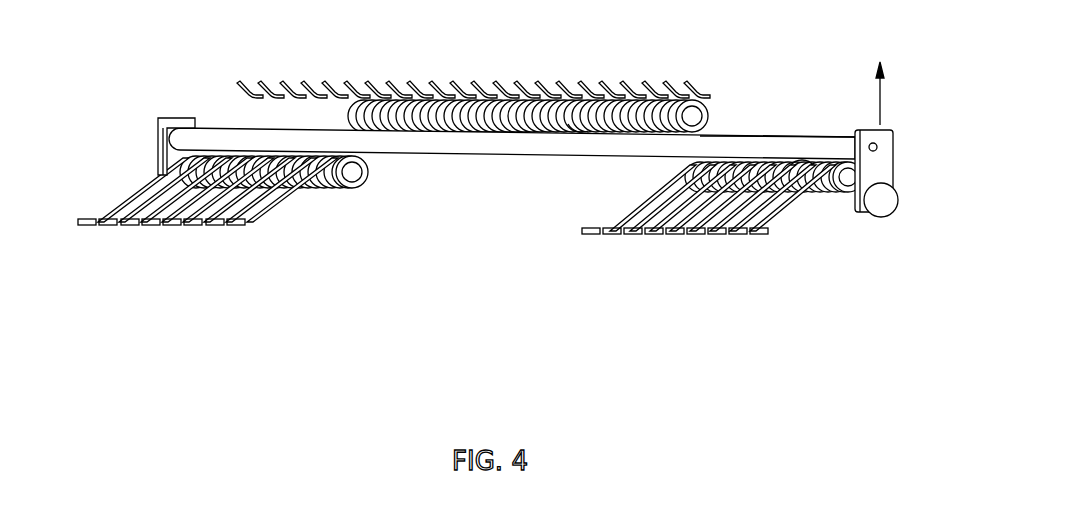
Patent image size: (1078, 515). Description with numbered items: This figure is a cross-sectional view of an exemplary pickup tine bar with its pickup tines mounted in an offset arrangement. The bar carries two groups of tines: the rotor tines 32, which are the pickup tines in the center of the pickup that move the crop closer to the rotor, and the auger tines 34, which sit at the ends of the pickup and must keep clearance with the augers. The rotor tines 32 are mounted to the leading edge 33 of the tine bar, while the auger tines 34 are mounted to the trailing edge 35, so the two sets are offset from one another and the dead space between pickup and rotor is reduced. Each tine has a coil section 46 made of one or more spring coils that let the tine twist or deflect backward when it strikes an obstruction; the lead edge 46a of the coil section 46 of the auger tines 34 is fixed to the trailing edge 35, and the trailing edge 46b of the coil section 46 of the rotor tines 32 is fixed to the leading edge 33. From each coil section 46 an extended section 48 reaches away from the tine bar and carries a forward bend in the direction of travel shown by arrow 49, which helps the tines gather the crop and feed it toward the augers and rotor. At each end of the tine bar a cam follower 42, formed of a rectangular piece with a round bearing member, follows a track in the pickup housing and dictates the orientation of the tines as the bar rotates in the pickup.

The rotor tines 32 is at (238, 82).
The leading edge 33 is at (748, 137).
The auger tines 34 is at (230, 228).
The trailing edge 35 is at (470, 156).
The cam follower 42 is at (895, 209).
The coil section 46 is at (712, 105).
The lead edge of the coil section 46a is at (802, 160).
The trailing edge of the coil section 46b is at (582, 132).
The extended section 48 is at (300, 84).
The arrow 49 is at (880, 101).